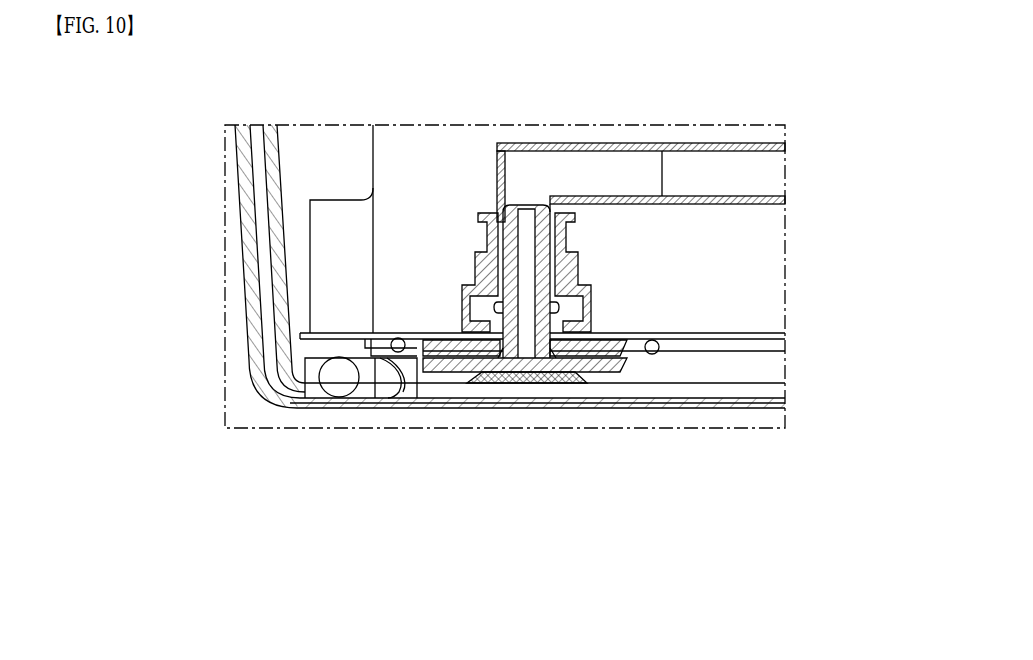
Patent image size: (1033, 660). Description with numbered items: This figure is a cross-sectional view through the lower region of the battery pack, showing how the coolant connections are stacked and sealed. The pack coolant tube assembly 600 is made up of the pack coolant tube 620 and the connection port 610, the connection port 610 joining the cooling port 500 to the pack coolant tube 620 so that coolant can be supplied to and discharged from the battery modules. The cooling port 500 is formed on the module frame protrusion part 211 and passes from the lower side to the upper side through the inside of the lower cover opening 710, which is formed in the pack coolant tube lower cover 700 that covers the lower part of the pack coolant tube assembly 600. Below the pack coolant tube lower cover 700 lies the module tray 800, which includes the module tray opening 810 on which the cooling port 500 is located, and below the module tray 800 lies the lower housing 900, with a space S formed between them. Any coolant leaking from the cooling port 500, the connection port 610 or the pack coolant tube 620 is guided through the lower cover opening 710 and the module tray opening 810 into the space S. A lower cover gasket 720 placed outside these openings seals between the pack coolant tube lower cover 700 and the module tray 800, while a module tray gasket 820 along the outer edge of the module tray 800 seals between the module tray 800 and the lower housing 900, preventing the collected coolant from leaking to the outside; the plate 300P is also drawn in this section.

The pack coolant tube lower cover 700 is at (373, 332).
The lower housing 900 is at (448, 405).
The module tray gasket 820 is at (333, 385).
The module tray 800 is at (380, 360).
The lower cover gasket 720 is at (419, 378).
The space S is at (391, 392).
The pack coolant tube 620 is at (640, 170).
The connection port 610 is at (481, 234).
The lower cover opening 710 is at (578, 336).
The module tray opening 810 is at (628, 362).
The cooling port 500 is at (537, 207).
The plate 300P is at (562, 385).
The module frame protrusion part 211 is at (672, 361).
The pack coolant tube assembly 600 is at (652, 588).